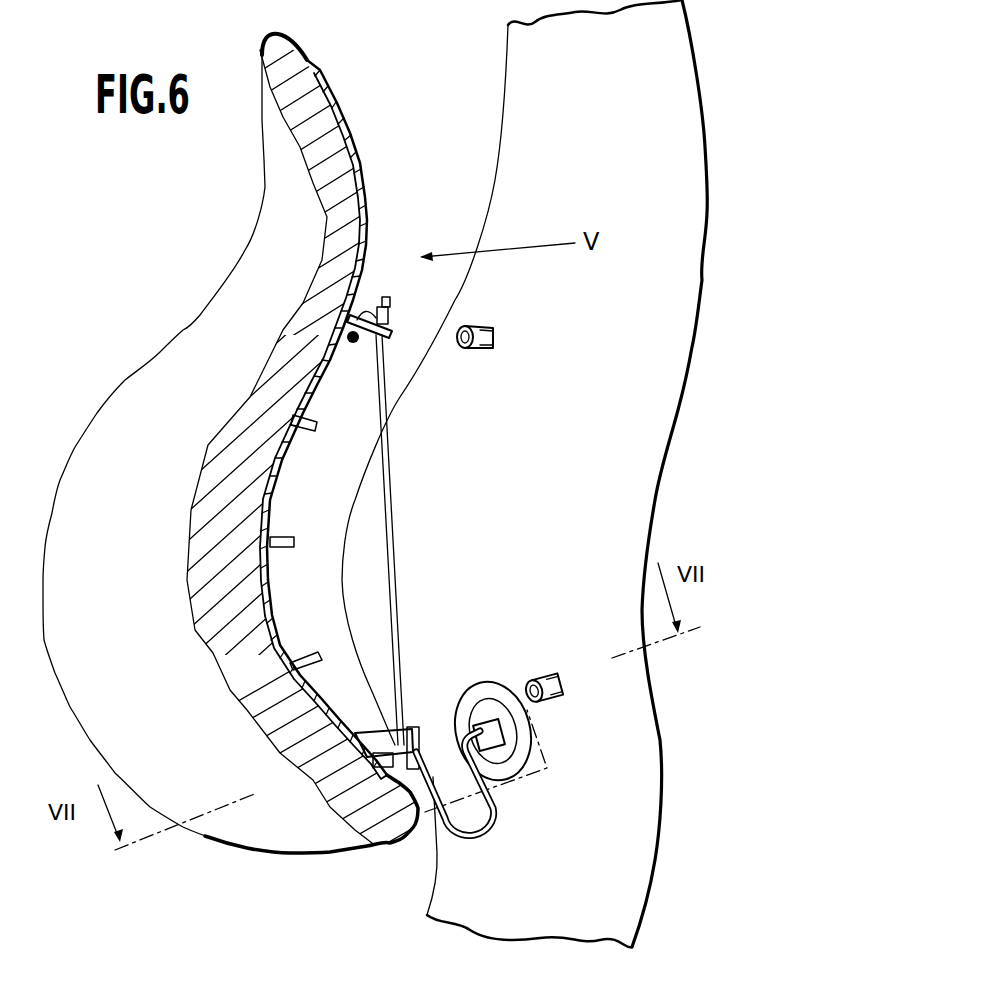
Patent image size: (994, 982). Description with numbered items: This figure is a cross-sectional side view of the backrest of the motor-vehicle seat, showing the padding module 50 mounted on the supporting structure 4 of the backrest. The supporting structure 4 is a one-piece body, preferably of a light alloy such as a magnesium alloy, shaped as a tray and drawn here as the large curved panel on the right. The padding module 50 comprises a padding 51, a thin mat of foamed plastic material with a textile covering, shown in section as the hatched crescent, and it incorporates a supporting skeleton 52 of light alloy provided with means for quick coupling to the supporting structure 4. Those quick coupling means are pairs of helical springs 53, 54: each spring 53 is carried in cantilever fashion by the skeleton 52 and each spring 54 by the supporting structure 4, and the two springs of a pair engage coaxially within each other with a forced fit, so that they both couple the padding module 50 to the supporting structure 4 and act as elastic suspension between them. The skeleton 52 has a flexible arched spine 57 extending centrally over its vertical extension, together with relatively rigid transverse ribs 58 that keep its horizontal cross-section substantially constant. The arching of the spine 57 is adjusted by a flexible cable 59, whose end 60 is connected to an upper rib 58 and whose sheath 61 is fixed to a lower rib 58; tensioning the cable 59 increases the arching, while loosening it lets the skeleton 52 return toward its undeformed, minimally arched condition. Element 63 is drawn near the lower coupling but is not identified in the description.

The supporting structure 4 is at (655, 405).
The padding module 50 is at (232, 206).
The padding 51 is at (290, 62).
The supporting skeleton 52 is at (362, 132).
The helical spring 53 is at (360, 342).
The helical spring 54 is at (492, 347).
The flexible arched spine 57 is at (260, 500).
The transverse rib 58 is at (282, 537).
The flexible cable 59 is at (400, 573).
The cable end 60 is at (392, 322).
The sheath 61 is at (467, 843).
The grommet 63 is at (513, 780).